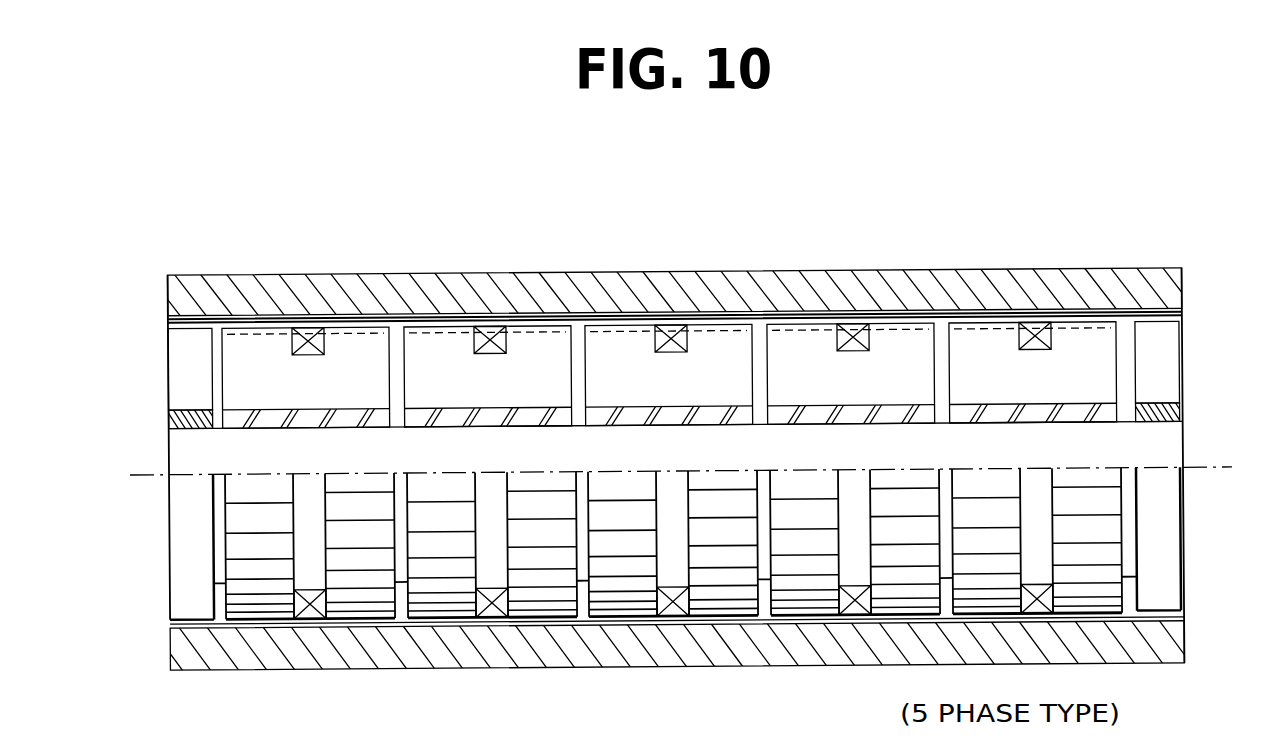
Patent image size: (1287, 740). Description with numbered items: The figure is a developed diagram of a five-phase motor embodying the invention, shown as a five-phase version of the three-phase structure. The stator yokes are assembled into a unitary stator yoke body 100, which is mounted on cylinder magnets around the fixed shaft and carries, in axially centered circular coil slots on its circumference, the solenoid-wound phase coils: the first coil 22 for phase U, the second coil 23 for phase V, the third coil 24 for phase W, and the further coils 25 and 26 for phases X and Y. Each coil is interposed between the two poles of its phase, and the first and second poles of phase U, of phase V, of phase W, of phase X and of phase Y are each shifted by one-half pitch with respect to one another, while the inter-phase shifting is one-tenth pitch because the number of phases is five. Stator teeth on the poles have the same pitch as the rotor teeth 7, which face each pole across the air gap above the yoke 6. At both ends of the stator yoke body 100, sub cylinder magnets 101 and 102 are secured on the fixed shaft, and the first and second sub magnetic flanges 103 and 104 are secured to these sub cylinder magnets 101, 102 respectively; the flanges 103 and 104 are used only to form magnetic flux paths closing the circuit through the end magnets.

The stator yoke body 100 is at (1135, 207).
The stator yoke 6 is at (705, 300).
The rotor teeth 7 is at (543, 318).
The first coil 22 is at (311, 324).
The second coil 23 is at (490, 324).
The third coil 24 is at (670, 324).
The X phase coil 25 is at (853, 324).
The Y phase coil 26 is at (1036, 324).
The sub cylinder magnet 101 is at (176, 419).
The sub cylinder magnet 102 is at (1178, 418).
The first sub magnetic flange 103 is at (186, 376).
The second sub magnetic flange 104 is at (1172, 390).